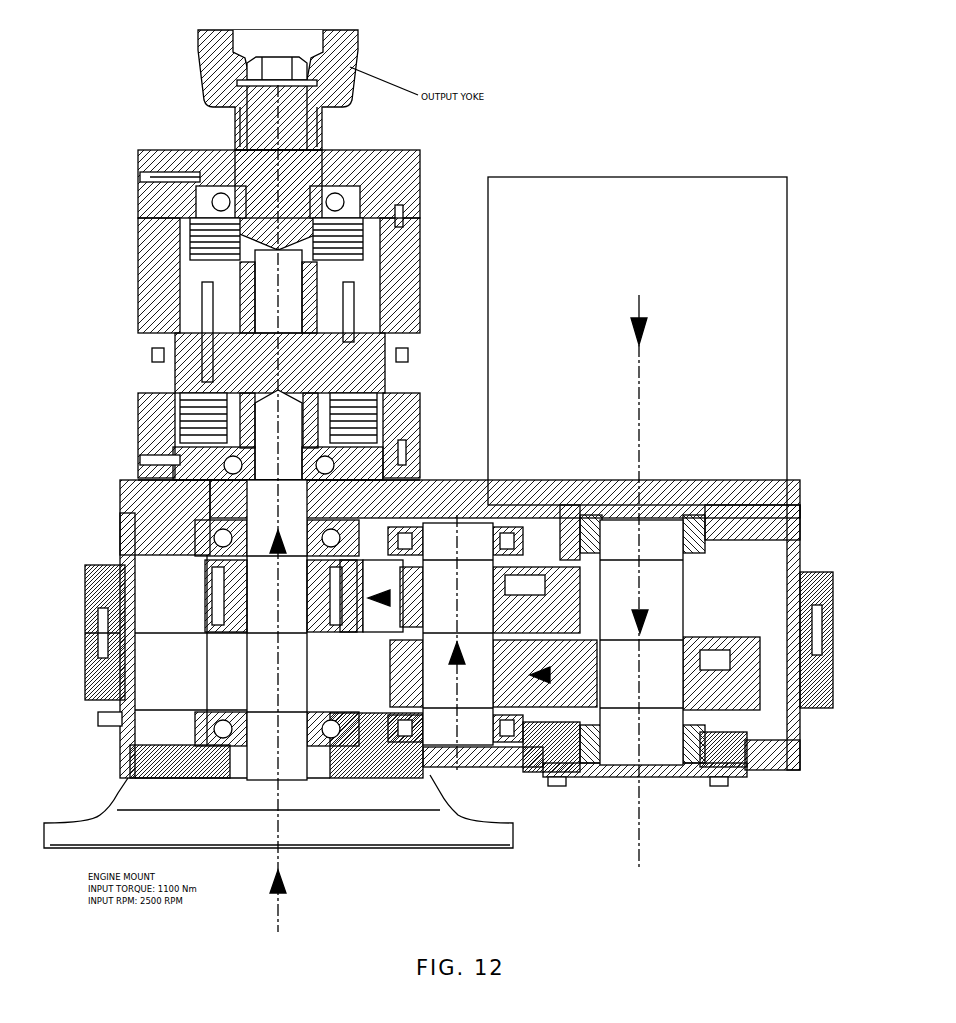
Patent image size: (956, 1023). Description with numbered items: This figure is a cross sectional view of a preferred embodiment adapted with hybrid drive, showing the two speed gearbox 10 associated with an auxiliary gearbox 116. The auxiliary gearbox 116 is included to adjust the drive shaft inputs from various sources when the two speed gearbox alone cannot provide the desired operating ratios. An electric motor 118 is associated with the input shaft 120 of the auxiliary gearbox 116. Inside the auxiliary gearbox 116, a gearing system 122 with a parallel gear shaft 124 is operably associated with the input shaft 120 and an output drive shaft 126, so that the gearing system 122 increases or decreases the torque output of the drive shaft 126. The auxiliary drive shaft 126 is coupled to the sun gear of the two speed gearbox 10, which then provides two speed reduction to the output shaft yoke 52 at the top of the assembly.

The output shaft yoke 52 is at (357, 33).
The two speed gearbox 10 is at (158, 280).
The electric motor 118 is at (764, 297).
The auxiliary gearbox 116 is at (530, 773).
The output drive shaft 126 is at (294, 765).
The gearing system 122 is at (233, 613).
The parallel gear shaft 124 is at (477, 733).
The input shaft 120 is at (657, 700).